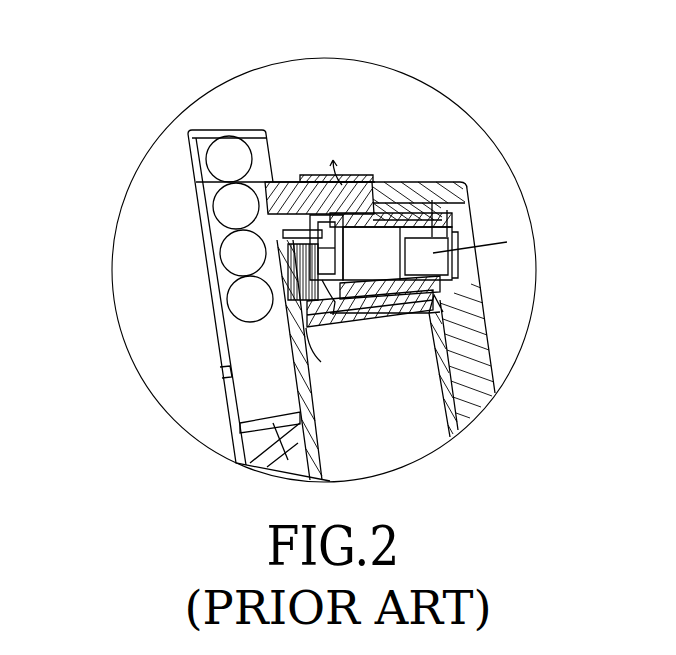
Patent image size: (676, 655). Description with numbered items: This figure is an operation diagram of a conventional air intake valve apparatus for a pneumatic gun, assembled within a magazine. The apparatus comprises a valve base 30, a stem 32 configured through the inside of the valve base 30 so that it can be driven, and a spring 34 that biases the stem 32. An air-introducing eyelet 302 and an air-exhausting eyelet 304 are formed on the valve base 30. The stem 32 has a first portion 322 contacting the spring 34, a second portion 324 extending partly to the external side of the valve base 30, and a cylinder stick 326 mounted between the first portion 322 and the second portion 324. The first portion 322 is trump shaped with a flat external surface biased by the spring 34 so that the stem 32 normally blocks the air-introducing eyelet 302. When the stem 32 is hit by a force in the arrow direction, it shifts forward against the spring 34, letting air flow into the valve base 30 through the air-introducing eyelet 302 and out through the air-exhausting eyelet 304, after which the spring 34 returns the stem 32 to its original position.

The valve base 30 is at (458, 218).
The air-introducing eyelet 302 is at (288, 242).
The air-exhausting eyelet 304 is at (352, 175).
The stem 32 is at (473, 258).
The first portion 322 is at (288, 255).
The second portion 324 is at (453, 258).
The cylinder stick 326 is at (383, 268).
The spring 34 is at (285, 296).